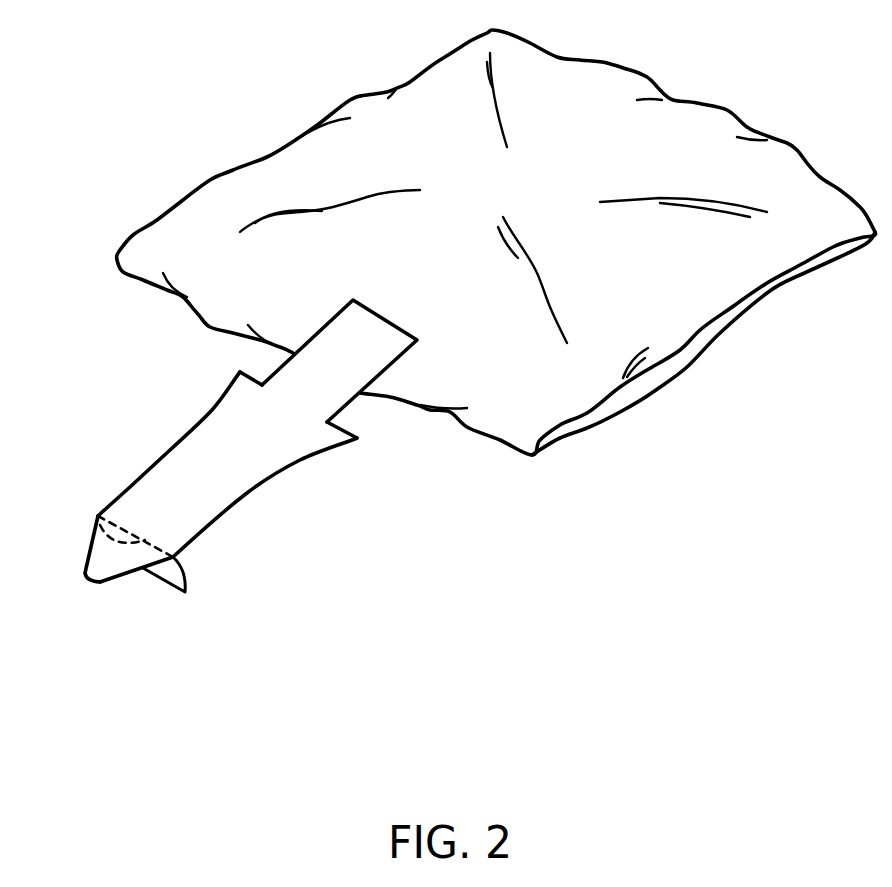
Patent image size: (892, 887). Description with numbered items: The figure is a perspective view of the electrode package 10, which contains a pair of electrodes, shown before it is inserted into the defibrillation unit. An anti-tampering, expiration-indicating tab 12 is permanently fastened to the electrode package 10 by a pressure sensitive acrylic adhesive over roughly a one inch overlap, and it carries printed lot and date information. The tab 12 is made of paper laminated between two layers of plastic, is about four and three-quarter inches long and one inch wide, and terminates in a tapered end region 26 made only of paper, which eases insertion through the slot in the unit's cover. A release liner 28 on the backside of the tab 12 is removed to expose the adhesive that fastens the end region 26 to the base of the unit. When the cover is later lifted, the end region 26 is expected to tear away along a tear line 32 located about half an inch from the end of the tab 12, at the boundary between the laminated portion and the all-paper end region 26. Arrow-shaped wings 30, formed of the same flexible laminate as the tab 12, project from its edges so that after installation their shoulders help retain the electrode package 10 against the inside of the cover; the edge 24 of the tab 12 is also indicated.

The electrode package 10 is at (372, 117).
The anti-tampering, expiration-indicating tab 12 is at (213, 481).
The bottom edge of tag 24 is at (210, 530).
The end region 26 is at (92, 542).
The release liner 28 is at (170, 583).
The arrow-shaped wings 30 is at (243, 400).
The tear line 32 is at (93, 520).